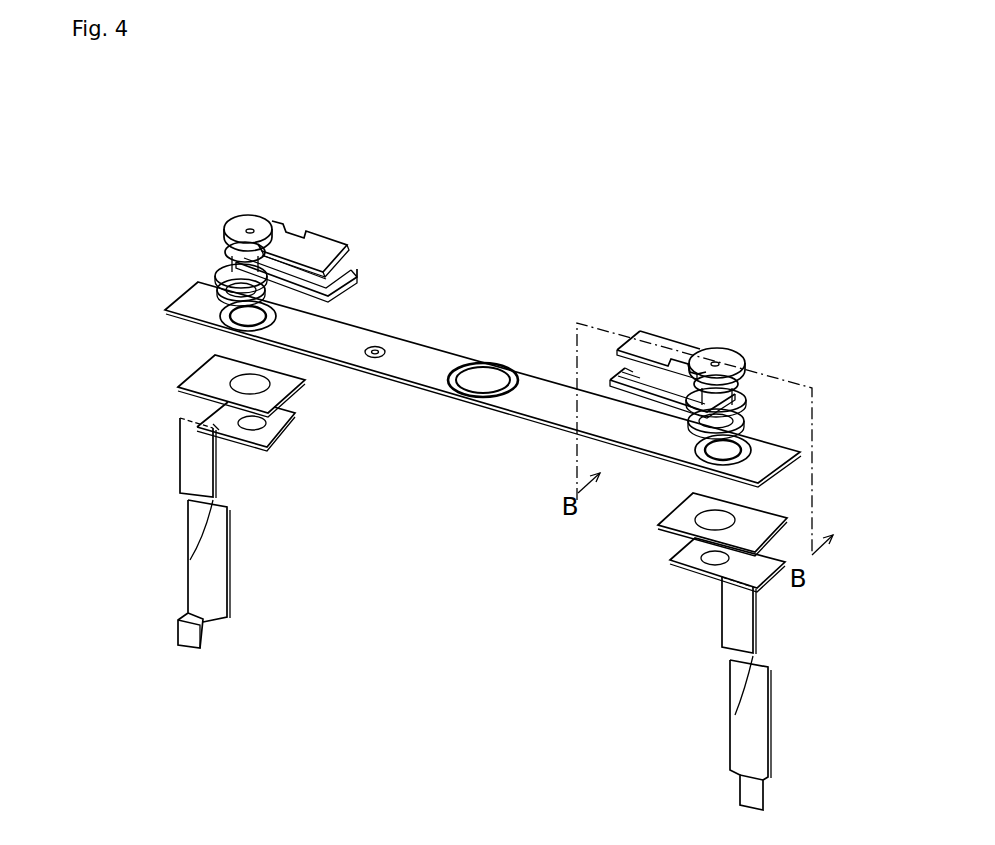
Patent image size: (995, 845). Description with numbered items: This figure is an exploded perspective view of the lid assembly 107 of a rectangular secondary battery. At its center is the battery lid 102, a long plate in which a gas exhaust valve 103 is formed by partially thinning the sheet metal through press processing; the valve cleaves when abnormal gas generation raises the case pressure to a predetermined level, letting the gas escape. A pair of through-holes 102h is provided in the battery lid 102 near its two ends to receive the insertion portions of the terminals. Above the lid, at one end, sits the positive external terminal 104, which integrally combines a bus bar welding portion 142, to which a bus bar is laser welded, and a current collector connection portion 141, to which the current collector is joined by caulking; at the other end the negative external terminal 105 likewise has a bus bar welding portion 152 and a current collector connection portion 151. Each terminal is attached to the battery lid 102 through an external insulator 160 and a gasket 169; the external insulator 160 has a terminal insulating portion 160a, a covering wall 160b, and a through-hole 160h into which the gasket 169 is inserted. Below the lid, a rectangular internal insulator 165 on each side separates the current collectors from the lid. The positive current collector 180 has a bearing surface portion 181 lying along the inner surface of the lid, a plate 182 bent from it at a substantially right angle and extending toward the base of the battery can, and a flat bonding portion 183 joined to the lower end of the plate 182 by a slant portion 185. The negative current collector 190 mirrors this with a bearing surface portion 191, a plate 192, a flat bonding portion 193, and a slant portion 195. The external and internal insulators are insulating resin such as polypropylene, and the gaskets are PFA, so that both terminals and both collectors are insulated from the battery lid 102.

The battery lid 102 is at (447, 353).
The through-holes 102h is at (265, 327).
The gas exhaust valve 103 is at (477, 377).
The positive external terminal 104 is at (253, 125).
The current collector connection portion 141 is at (262, 222).
The bus bar welding portion 142 is at (320, 240).
The negative external terminal 105 is at (657, 245).
The current collector connection portion 151 is at (723, 358).
The bus bar welding portion 152 is at (664, 340).
The lid assembly 107 is at (716, 139).
The external insulator 160 is at (365, 284).
The terminal insulating portion 160a is at (322, 284).
The covering wall 160b is at (357, 281).
The through-hole 160h is at (224, 250).
The gasket 169 is at (217, 282).
The internal insulator 165 is at (193, 375).
The positive current collector 180 is at (243, 505).
The bearing surface portion 181 is at (255, 448).
The plate 182 is at (190, 476).
The flat bonding portion 183 is at (188, 592).
The slant portion 185 is at (188, 548).
The negative current collector 190 is at (698, 630).
The bearing surface portion 191 is at (688, 578).
The plate 192 is at (745, 613).
The flat bonding portion 193 is at (755, 733).
The slant portion 195 is at (772, 662).